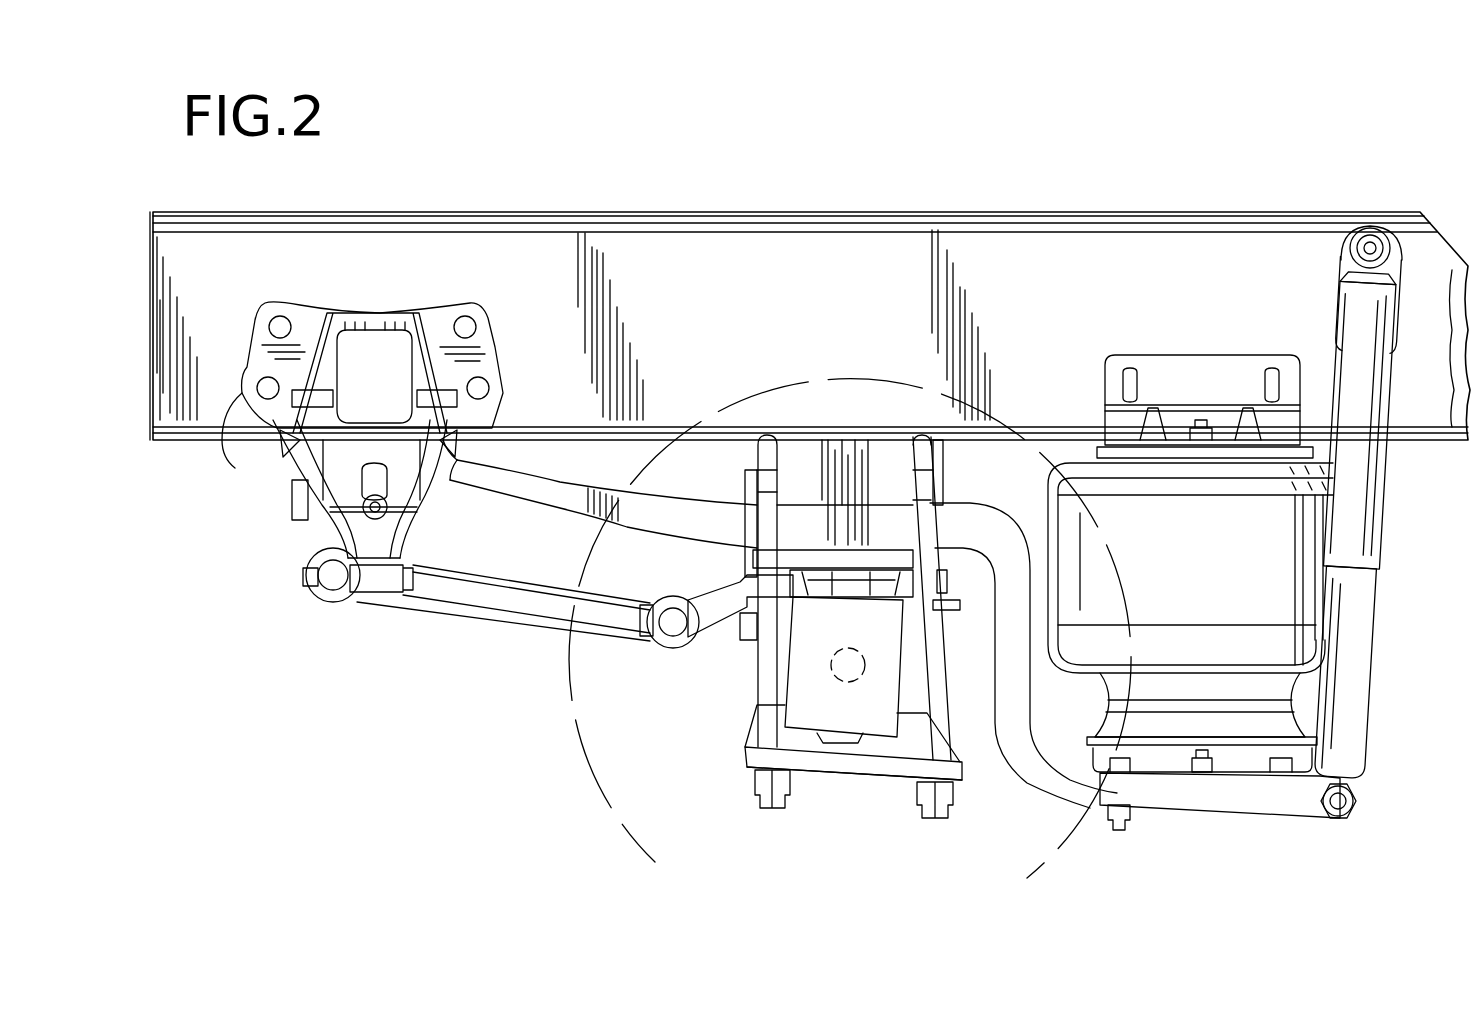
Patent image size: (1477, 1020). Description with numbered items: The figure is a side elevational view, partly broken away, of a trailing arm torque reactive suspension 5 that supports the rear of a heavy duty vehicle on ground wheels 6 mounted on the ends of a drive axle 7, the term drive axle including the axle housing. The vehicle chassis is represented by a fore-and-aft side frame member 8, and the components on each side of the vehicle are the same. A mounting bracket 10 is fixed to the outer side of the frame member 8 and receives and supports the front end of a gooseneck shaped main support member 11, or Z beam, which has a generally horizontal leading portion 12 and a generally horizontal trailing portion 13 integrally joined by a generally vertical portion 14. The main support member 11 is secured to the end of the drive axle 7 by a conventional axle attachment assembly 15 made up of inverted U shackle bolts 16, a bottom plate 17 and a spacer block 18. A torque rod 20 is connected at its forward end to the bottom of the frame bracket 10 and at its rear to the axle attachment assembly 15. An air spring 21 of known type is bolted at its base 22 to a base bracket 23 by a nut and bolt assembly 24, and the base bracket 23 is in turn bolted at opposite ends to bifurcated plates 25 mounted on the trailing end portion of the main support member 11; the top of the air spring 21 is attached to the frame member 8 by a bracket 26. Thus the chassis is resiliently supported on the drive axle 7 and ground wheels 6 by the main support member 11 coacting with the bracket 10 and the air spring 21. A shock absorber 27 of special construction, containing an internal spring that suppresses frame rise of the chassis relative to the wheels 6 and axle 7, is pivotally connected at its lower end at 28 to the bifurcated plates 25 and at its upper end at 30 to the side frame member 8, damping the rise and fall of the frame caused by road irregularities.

The trailing arm torque reactive suspension 5 is at (373, 712).
The ground wheels 6 is at (600, 818).
The drive axle 7 is at (780, 670).
The frame members 8 is at (510, 208).
The mounting bracket 10 is at (250, 382).
The main support member 11 is at (573, 516).
The leading portion 12 is at (480, 480).
The trailing portion 13 is at (1097, 832).
The vertical portion 14 is at (968, 772).
The axle attachment assembly 15 is at (725, 748).
The shackle bolts 16 is at (928, 678).
The bottom plate 17 is at (838, 767).
The spacer block 18 is at (748, 500).
The torque rod 20 is at (460, 617).
The air spring 21 is at (1037, 503).
The base 22 is at (1103, 717).
The base bracket 23 is at (1245, 765).
The nut and bolt assembly 24 is at (1182, 758).
The bifurcated plates 25 is at (1293, 815).
The bracket 26 is at (1215, 355).
The shock absorber 27 is at (1403, 543).
The lower pivotal connection 28 is at (1355, 806).
The upper pivotal connection 30 is at (1368, 228).